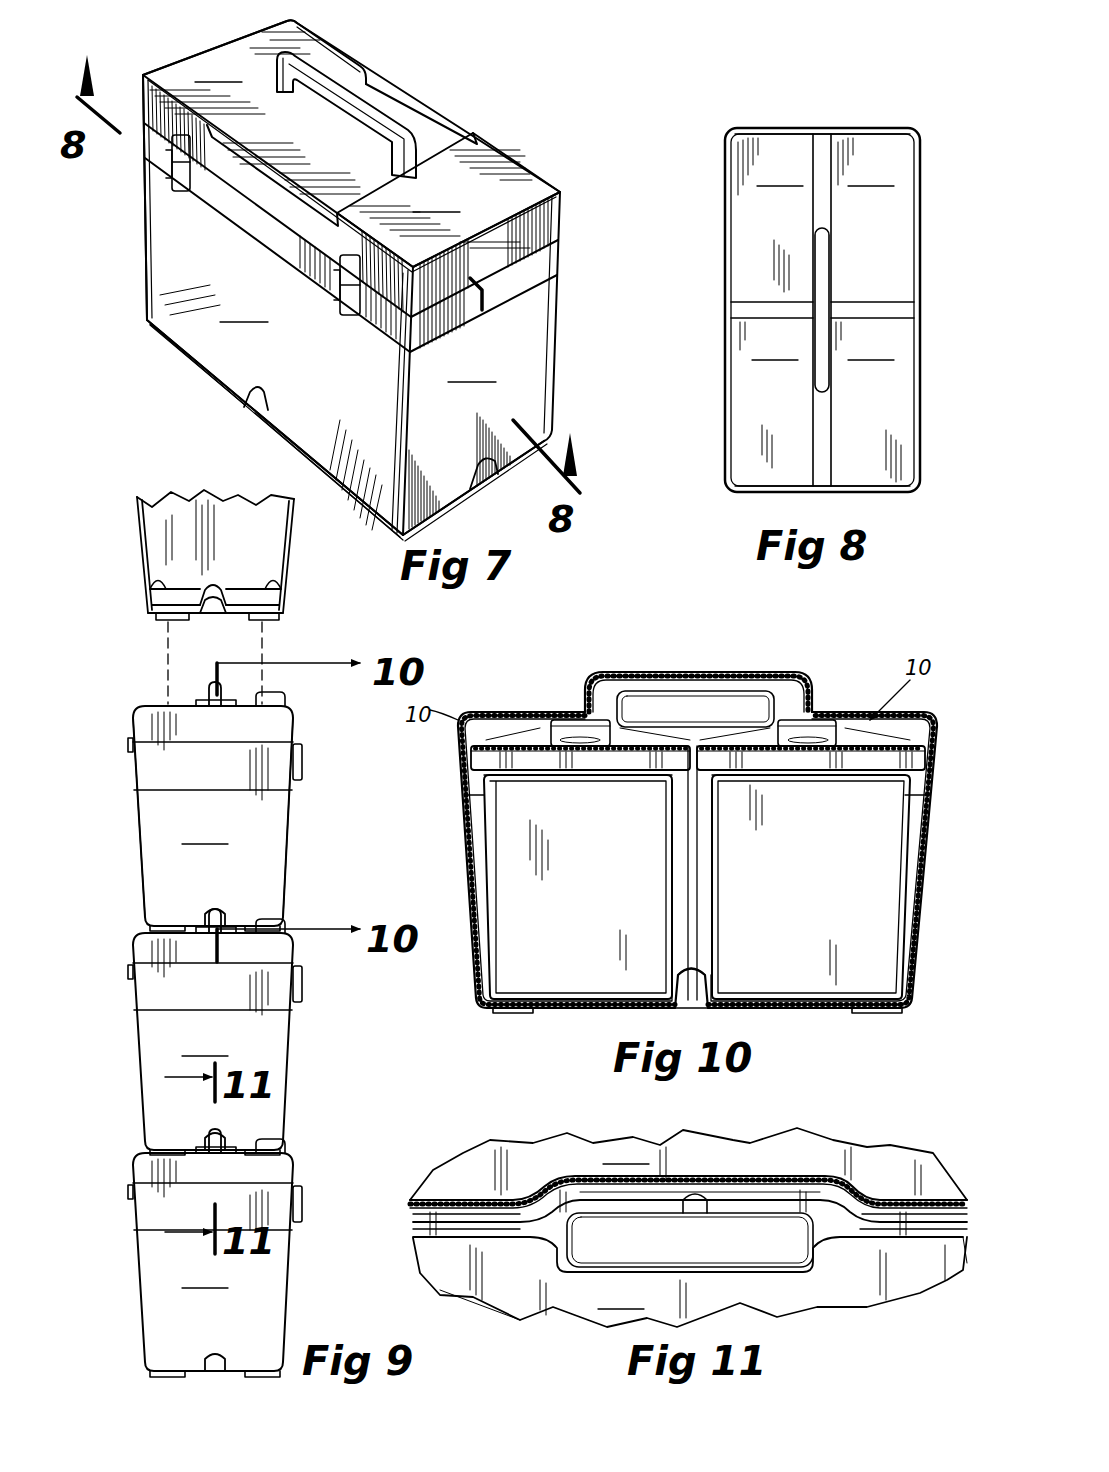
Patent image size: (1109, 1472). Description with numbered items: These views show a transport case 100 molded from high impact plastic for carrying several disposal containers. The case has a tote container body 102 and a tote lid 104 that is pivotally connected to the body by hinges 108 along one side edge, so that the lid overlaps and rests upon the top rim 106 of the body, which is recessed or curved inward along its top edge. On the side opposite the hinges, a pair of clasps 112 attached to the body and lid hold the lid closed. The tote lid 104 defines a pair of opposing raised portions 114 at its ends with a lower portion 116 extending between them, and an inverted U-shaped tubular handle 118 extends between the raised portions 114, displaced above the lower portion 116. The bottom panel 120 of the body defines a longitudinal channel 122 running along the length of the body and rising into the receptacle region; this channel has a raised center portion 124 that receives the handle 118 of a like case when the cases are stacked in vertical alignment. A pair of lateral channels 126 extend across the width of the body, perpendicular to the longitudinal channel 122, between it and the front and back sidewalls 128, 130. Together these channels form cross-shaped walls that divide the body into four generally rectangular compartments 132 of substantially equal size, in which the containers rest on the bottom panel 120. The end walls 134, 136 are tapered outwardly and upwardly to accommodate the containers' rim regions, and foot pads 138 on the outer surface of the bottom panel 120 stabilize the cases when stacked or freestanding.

In FIG. 7, the transport case 100 is at (395, 45).
In FIG. 9, the transport case 100 is at (130, 518).
In FIG. 10, the transport case 100 is at (655, 640).
In FIG. 7, the tote container body 102 is at (558, 374).
In FIG. 8, the tote container body 102 is at (722, 150).
In FIG. 9, the tote container body 102 is at (295, 830).
In FIG. 10, the tote container body 102 is at (470, 960).
In FIG. 11, the tote container body 102 is at (535, 1140).
In FIG. 7, the tote lid 104 is at (490, 160).
In FIG. 9, the tote lid 104 is at (298, 712).
In FIG. 10, the tote lid 104 is at (505, 720).
In FIG. 11, the tote lid 104 is at (445, 1290).
In FIG. 7, the top rim 106 is at (545, 245).
In FIG. 8, the top rim 106 is at (918, 134).
In FIG. 9, the top rim 106 is at (290, 740).
In FIG. 10, the top rim 106 is at (470, 746).
In FIG. 9, the hinges 108 is at (128, 742).
In FIG. 7, the clasps 112 is at (172, 185).
In FIG. 9, the clasps 112 is at (304, 762).
In FIG. 7, the raised portions 114 is at (341, 140).
In FIG. 9, the raised portions 114 is at (265, 700).
In FIG. 10, the raised portions 114 is at (535, 712).
In FIG. 11, the raised portions 114 is at (413, 1228).
In FIG. 7, the lower portion 116 is at (335, 152).
In FIG. 10, the lower portion 116 is at (695, 722).
In FIG. 11, the lower portion 116 is at (640, 1268).
In FIG. 7, the tubular handle 118 is at (362, 96).
In FIG. 9, the tubular handle 118 is at (209, 692).
In FIG. 10, the tubular handle 118 is at (740, 672).
In FIG. 11, the tubular handle 118 is at (880, 1198).
In FIG. 7, the bottom panel 120 is at (200, 372).
In FIG. 8, the bottom panel 120 is at (752, 445).
In FIG. 9, the bottom panel 120 is at (232, 615).
In FIG. 10, the bottom panel 120 is at (590, 1010).
In FIG. 11, the bottom panel 120 is at (965, 1245).
In FIG. 7, the longitudinal channel 122 is at (478, 478).
In FIG. 8, the longitudinal channel 122 is at (830, 148).
In FIG. 9, the longitudinal channel 122 is at (210, 615).
In FIG. 11, the longitudinal channel 122 is at (415, 1210).
In FIG. 8, the raised center portion 124 is at (830, 238).
In FIG. 9, the raised center portion 124 is at (214, 585).
In FIG. 10, the raised center portion 124 is at (705, 965).
In FIG. 11, the raised center portion 124 is at (752, 1177).
In FIG. 7, the lateral channels 126 is at (258, 405).
In FIG. 8, the lateral channels 126 is at (740, 302).
In FIG. 9, the lateral channels 126 is at (150, 580).
In FIG. 10, the lateral channels 126 is at (680, 1008).
In FIG. 11, the lateral channels 126 is at (702, 1232).
In FIG. 7, the front sidewall 128 is at (275, 410).
In FIG. 8, the front sidewall 128 is at (722, 340).
In FIG. 9, the front sidewall 128 is at (286, 537).
In FIG. 10, the front sidewall 128 is at (465, 790).
In FIG. 11, the front sidewall 128 is at (542, 1303).
In FIG. 7, the back sidewall 130 is at (560, 312).
In FIG. 8, the back sidewall 130 is at (922, 340).
In FIG. 9, the back sidewall 130 is at (140, 537).
In FIG. 11, the back sidewall 130 is at (688, 1174).
In FIG. 8, the compartments 132 is at (823, 262).
In FIG. 7, the end wall 134 is at (473, 447).
In FIG. 8, the end wall 134 is at (875, 495).
In FIG. 9, the end wall 134 is at (245, 520).
In FIG. 10, the end wall 134 is at (465, 833).
In FIG. 7, the end wall 136 is at (135, 217).
In FIG. 8, the end wall 136 is at (775, 128).
In FIG. 9, the end wall 136 is at (205, 1055).
In FIG. 10, the end wall 136 is at (935, 808).
In FIG. 9, the foot pads 138 is at (165, 620).
In FIG. 10, the foot pads 138 is at (508, 1014).